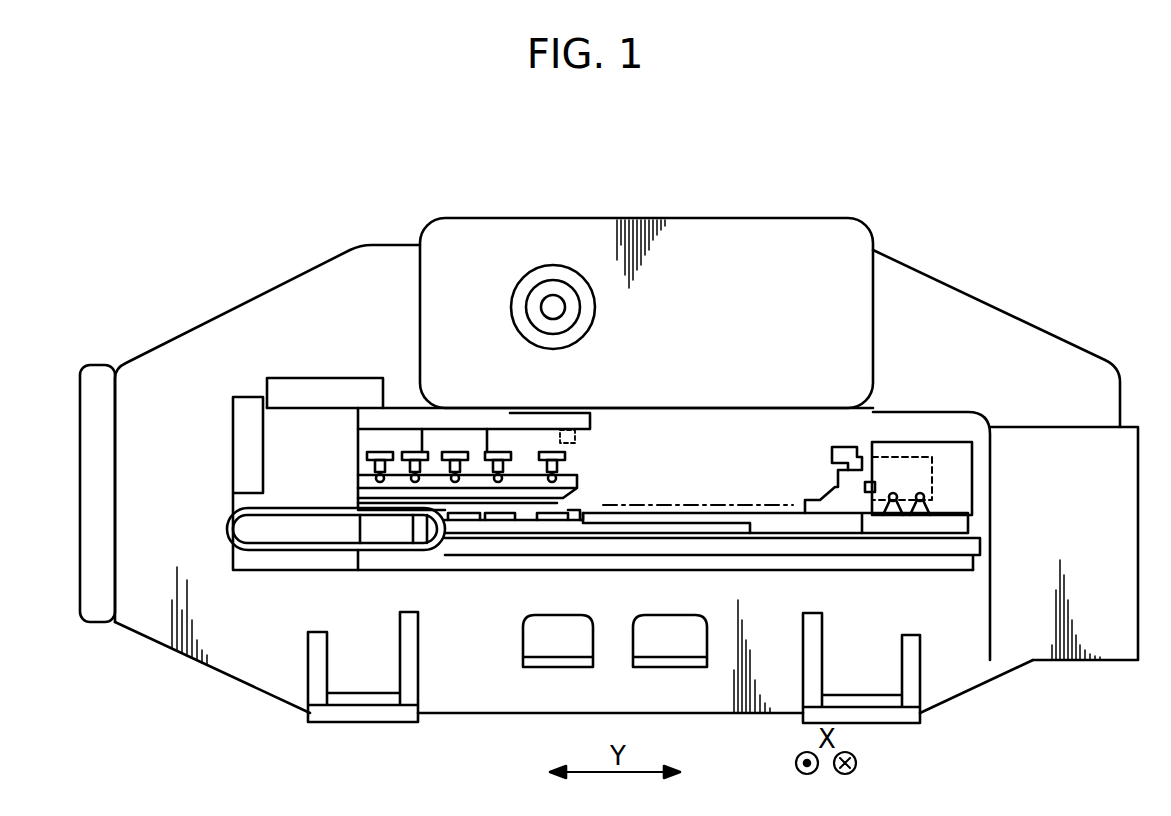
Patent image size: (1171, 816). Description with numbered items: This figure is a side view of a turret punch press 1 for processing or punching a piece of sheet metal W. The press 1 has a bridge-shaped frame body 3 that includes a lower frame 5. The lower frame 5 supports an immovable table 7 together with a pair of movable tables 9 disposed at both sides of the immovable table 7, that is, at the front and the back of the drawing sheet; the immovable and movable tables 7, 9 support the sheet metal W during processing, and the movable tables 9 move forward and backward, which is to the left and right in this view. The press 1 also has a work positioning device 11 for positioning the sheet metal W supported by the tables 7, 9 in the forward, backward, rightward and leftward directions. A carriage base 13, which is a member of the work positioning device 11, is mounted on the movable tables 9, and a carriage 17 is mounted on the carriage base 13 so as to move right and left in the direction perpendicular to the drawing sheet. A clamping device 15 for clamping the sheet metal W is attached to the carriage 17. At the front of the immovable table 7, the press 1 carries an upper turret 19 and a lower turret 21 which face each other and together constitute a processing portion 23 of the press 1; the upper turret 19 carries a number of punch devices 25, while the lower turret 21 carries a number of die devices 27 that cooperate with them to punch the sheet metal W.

The turret punch press 1 is at (757, 216).
The bridge-shaped frame body 3 is at (1003, 305).
The lower frame 5 is at (973, 682).
The immovable table 7 is at (862, 515).
The movable tables 9 is at (654, 513).
The work positioning device 11 is at (830, 444).
The carriage base 13 is at (940, 442).
The clamping device 15 is at (835, 480).
The carriage 17 is at (898, 457).
The upper turret 19 is at (523, 478).
The lower turret 21 is at (508, 525).
The processing portion 23 is at (598, 490).
The punch devices 25 is at (572, 462).
The die devices 27 is at (595, 503).
The sheet metal W is at (712, 505).